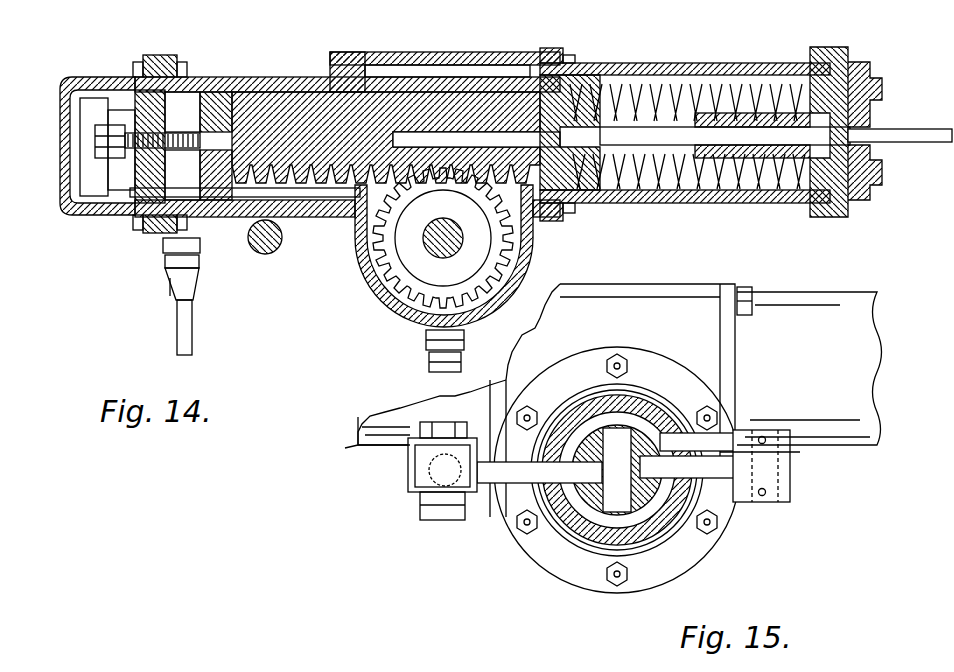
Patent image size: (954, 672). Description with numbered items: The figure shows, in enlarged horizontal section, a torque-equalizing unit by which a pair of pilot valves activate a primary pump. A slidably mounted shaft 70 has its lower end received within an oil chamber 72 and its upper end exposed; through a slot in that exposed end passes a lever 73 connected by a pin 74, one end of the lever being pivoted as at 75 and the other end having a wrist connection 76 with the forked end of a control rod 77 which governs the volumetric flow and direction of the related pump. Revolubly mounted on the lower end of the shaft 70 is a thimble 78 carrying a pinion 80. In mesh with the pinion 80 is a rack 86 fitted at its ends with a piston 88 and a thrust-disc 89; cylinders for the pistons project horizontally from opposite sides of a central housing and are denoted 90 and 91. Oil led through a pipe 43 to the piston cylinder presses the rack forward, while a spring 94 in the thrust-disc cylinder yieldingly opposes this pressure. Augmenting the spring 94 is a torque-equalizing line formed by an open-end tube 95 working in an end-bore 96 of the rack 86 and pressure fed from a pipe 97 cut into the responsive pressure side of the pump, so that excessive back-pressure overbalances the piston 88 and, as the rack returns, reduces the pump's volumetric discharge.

In FIG. 14, the pipe 43 is at (192, 318).
In FIG. 14, the shaft 70 is at (441, 255).
In FIG. 15, the shaft 70 is at (590, 425).
In FIG. 14, the oil chamber 72 is at (385, 66).
In FIG. 15, the lever 73 is at (513, 462).
In FIG. 15, the pin 74 is at (620, 436).
In FIG. 15, the pivot 75 is at (764, 502).
In FIG. 15, the wrist connection 76 is at (452, 422).
In FIG. 15, the control rod 77 is at (412, 480).
In FIG. 14, the thimble 78 is at (378, 284).
In FIG. 14, the pinion 80 is at (500, 250).
In FIG. 14, the rack 86 is at (412, 98).
In FIG. 14, the piston 88 is at (216, 92).
In FIG. 14, the thrust-disc 89 is at (548, 100).
In FIG. 14, the cylinder 90 is at (190, 77).
In FIG. 15, the cylinder 90 is at (392, 448).
In FIG. 14, the cylinder 91 is at (700, 75).
In FIG. 15, the cylinder 91 is at (846, 293).
In FIG. 14, the spring 94 is at (745, 78).
In FIG. 14, the open-end tube 95 is at (612, 135).
In FIG. 14, the end-bore 96 is at (455, 132).
In FIG. 14, the pipe 97 is at (926, 129).